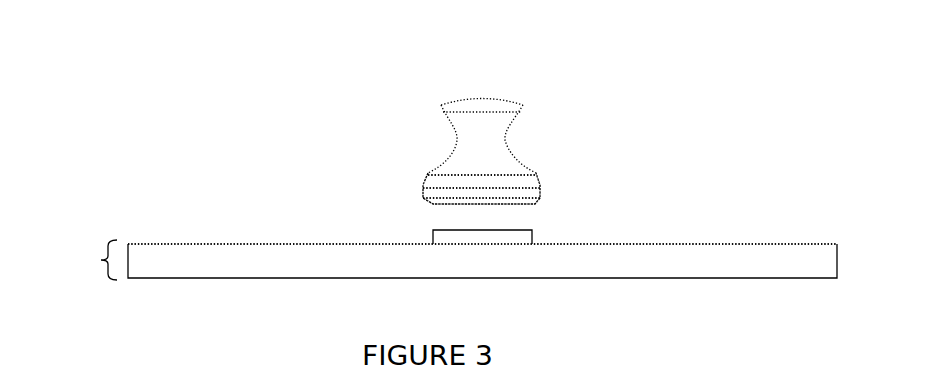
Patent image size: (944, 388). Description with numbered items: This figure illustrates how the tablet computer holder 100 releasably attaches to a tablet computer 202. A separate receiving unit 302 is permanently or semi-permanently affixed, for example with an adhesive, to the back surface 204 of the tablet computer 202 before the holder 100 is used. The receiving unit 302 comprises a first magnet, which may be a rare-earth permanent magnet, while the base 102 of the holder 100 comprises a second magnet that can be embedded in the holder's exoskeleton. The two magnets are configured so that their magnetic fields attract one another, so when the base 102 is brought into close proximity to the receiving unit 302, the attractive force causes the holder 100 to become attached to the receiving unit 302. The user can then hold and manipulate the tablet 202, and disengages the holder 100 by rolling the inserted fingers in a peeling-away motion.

The tablet computer holder 100 is at (419, 94).
The base 102 is at (593, 178).
The tablet computer 202 is at (446, 260).
The back surface 204 is at (213, 243).
The receiving unit 302 is at (431, 237).